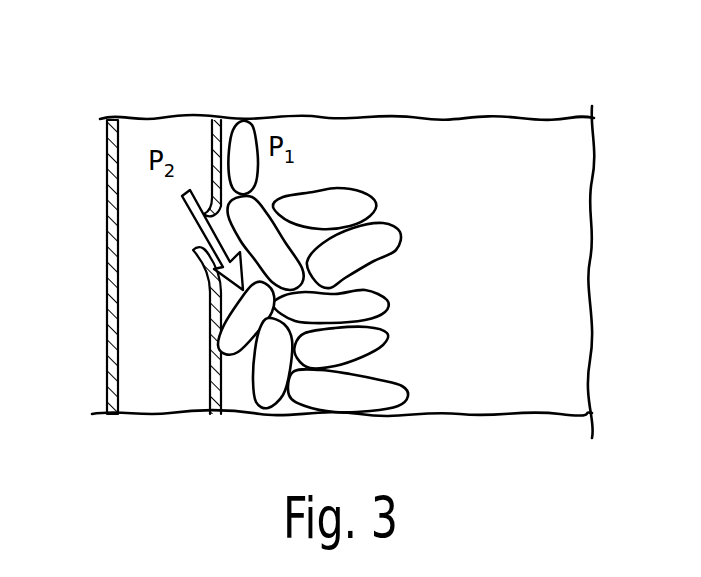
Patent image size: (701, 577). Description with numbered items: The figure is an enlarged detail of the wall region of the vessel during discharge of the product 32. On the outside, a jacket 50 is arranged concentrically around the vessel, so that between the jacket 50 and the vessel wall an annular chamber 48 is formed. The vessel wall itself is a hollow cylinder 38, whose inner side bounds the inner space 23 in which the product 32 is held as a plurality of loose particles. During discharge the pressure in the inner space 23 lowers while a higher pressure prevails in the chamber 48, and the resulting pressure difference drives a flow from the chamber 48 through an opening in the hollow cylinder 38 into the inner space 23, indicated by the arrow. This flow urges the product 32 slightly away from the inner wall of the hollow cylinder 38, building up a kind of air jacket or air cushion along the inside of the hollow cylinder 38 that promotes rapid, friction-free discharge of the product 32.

The inner space 23 is at (412, 153).
The product 32 is at (378, 247).
The hollow cylinder 38 is at (205, 118).
The chamber 48 is at (157, 353).
The jacket 50 is at (107, 211).